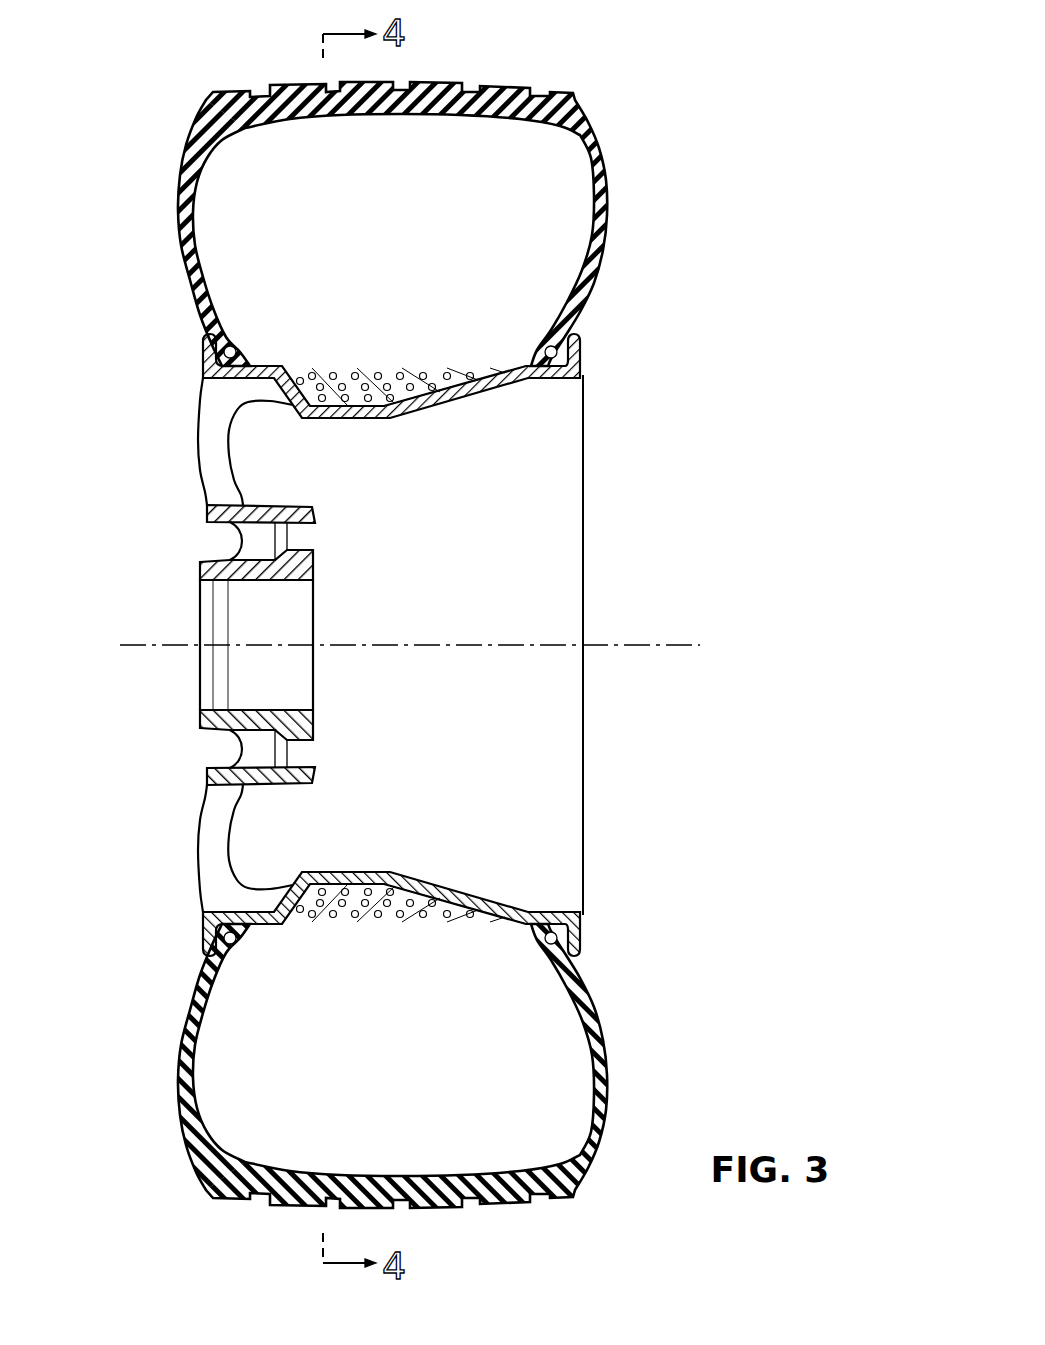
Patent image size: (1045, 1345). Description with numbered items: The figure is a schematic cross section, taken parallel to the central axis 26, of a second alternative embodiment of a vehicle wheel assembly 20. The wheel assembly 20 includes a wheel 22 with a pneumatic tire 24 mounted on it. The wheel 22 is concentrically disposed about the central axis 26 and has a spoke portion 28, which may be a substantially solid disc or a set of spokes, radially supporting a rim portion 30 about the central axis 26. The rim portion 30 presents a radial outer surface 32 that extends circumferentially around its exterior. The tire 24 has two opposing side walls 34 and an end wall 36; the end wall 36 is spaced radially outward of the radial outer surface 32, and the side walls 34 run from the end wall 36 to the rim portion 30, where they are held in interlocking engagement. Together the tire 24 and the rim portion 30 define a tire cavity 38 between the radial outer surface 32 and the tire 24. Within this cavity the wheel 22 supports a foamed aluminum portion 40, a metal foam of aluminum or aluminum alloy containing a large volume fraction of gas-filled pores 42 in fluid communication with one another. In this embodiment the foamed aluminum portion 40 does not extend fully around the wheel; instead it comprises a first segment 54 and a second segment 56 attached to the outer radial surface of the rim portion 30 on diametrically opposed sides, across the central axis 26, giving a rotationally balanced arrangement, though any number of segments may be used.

The wheel assembly 20 is at (645, 97).
The wheel 22 is at (200, 480).
The pneumatic tire 24 is at (394, 649).
The central axis 26 is at (672, 642).
The spoke portion 28 is at (205, 412).
The rim portion 30 is at (525, 380).
The radial outer surface 32 is at (391, 643).
The side walls 34 is at (178, 203).
The end wall 36 is at (443, 100).
The tire cavity 38 is at (375, 224).
The foamed aluminum portion 40 is at (368, 368).
The pores 42 is at (428, 368).
The first segment 54 is at (335, 368).
The second segment 56 is at (330, 923).